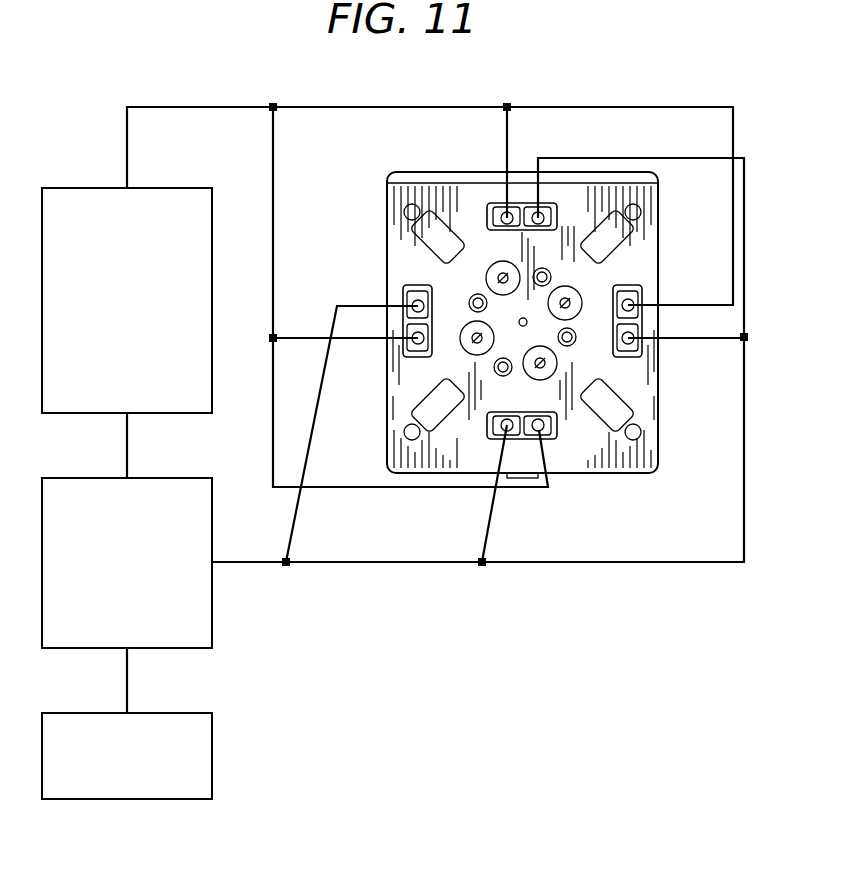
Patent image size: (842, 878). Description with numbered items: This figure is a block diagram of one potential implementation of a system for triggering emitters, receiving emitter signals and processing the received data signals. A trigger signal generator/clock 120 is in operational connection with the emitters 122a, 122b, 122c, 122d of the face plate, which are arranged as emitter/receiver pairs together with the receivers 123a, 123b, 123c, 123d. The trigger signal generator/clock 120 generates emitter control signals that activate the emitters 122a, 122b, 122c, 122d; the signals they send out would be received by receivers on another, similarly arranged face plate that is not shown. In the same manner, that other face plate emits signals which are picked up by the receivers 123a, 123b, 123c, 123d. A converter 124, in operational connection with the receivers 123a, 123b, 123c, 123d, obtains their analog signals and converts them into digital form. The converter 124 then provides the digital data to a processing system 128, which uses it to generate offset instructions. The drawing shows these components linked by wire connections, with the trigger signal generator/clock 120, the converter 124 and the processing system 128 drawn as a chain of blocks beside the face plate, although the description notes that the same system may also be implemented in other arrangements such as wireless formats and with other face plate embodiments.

The trigger signal generator/clock 120 is at (90, 187).
The converter 124 is at (90, 477).
The processing system 128 is at (90, 712).
The emitter 122a is at (505, 208).
The emitter 122b is at (632, 302).
The emitter 122c is at (545, 440).
The emitter 122d is at (412, 344).
The receiver 123a is at (536, 206).
The receiver 123b is at (632, 342).
The receiver 123c is at (500, 440).
The receiver 123d is at (412, 302).